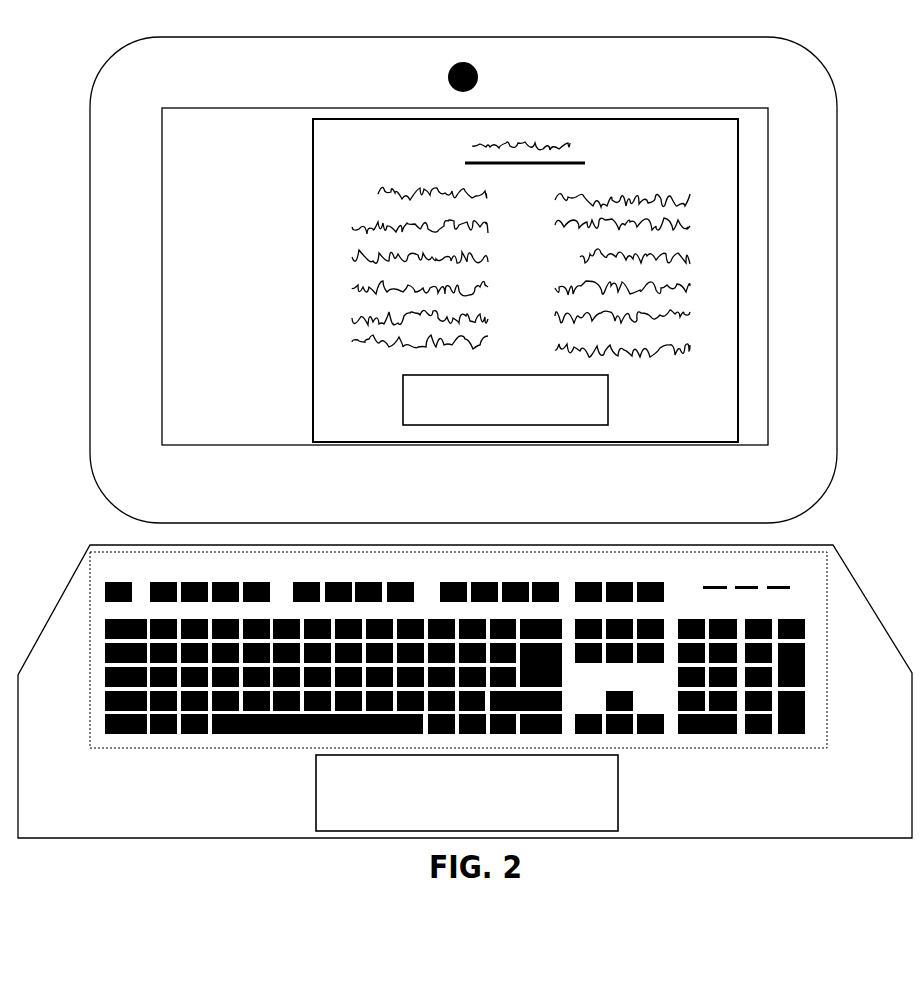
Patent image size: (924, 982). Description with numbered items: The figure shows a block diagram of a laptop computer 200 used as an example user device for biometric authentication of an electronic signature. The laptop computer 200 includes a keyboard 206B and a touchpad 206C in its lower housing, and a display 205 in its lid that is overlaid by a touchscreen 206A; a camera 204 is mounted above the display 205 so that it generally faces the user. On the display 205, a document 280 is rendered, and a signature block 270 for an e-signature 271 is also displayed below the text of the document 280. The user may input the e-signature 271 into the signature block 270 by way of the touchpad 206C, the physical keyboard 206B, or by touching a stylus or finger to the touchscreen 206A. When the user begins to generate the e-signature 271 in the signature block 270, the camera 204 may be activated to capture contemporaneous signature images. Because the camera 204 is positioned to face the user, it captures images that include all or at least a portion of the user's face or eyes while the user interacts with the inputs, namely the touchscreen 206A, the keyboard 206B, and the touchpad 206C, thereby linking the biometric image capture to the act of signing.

The laptop computer 200 is at (48, 270).
The camera 204 is at (466, 63).
The display 205 is at (207, 435).
The touchscreen 206A is at (768, 445).
The keyboard 206B is at (827, 683).
The touchpad 206C is at (486, 801).
The signature block 270 is at (609, 396).
The e-signature 271 is at (504, 392).
The document 280 is at (722, 148).